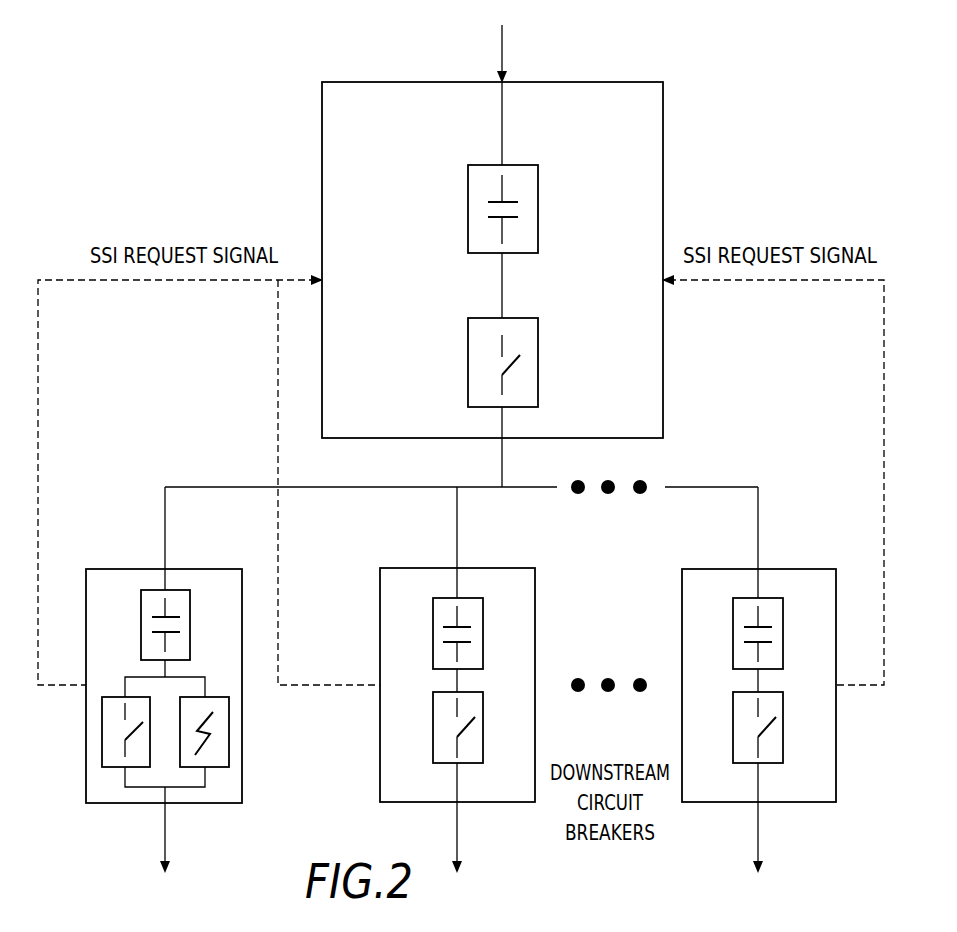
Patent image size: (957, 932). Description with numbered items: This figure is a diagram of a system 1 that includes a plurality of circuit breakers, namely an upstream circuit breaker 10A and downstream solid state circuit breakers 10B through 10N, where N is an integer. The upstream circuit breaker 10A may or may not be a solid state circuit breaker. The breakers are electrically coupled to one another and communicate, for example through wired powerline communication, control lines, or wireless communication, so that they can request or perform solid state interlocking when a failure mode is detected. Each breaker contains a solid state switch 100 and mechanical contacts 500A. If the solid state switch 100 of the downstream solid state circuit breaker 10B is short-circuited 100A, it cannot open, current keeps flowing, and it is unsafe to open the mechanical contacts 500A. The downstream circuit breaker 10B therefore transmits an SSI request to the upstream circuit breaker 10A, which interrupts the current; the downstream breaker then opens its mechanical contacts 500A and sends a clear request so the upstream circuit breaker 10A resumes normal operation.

The system 1 is at (176, 58).
The upstream circuit breaker 10A is at (665, 128).
The downstream solid state circuit breaker 10B is at (128, 569).
The downstream solid state circuit breaker 10N is at (682, 587).
The mechanical contacts 500A is at (468, 197).
The solid state switch 100 is at (468, 348).
The short circuit 100A is at (229, 722).